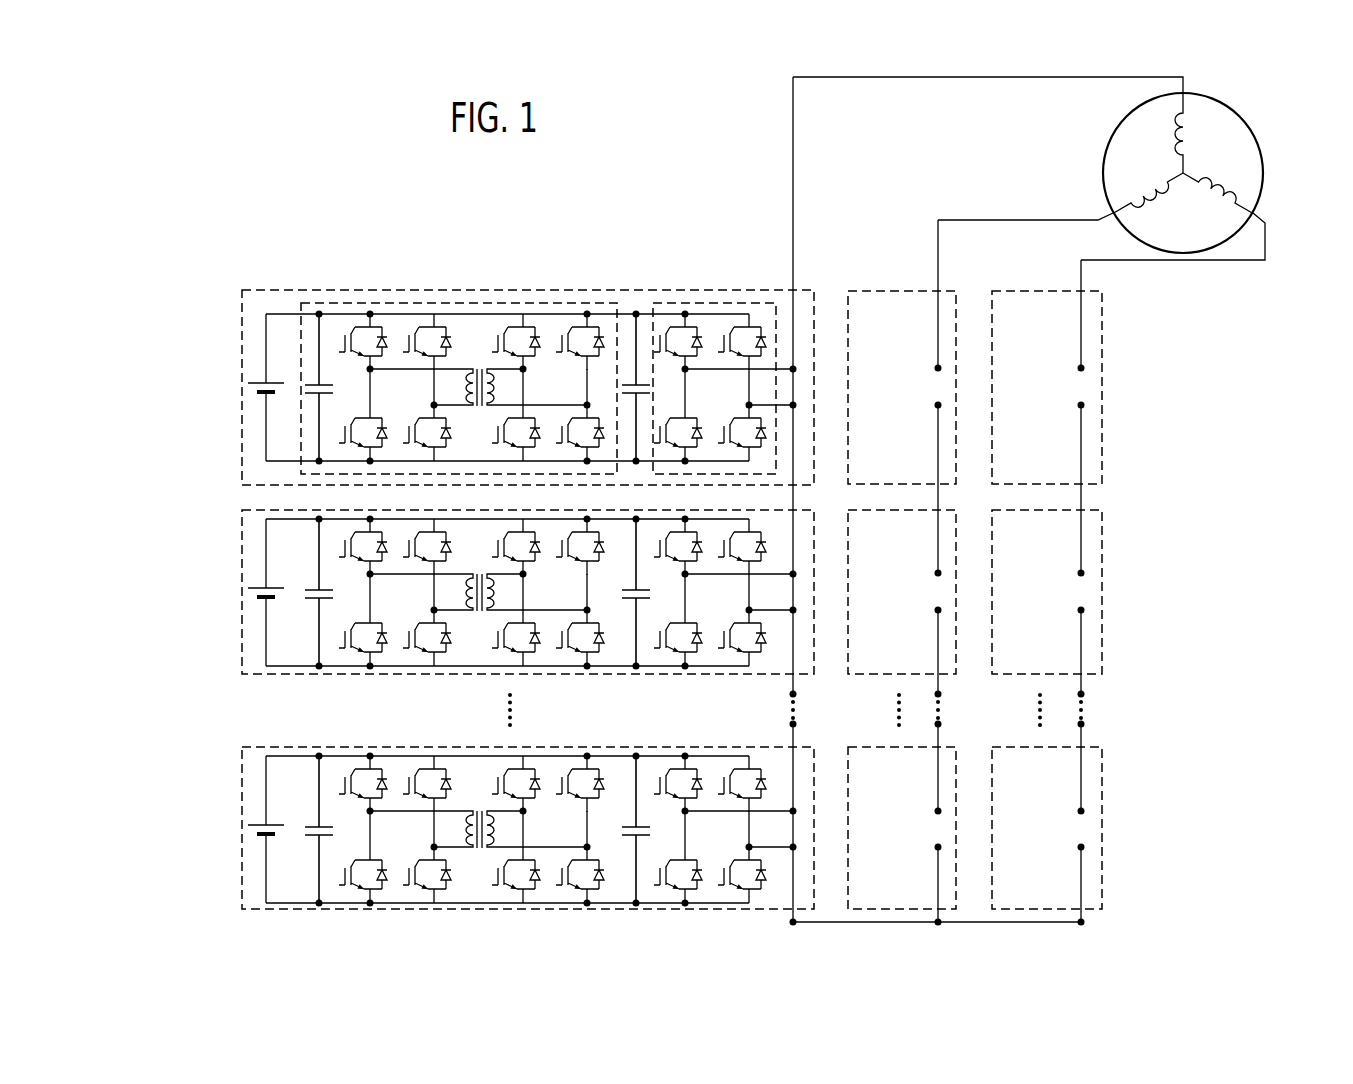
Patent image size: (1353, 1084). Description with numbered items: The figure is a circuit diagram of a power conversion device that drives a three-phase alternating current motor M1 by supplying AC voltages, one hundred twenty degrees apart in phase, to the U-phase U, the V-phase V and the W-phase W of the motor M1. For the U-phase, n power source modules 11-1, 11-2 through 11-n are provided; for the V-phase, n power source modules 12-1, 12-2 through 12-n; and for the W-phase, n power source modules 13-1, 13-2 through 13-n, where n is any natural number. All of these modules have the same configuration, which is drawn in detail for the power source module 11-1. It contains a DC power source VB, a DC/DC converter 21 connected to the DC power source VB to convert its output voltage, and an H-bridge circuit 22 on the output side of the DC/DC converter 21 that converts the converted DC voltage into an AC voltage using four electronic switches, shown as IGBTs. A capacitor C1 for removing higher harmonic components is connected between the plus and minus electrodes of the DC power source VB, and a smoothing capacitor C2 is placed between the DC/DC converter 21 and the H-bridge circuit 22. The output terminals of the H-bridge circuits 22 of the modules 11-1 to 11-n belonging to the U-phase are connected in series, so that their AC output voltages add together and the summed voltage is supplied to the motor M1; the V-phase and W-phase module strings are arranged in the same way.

The power source module 11-1 is at (482, 352).
The power source module 11-2 is at (240, 588).
The power source module 11-n is at (240, 825).
The power source module 12-1 is at (957, 432).
The power source module 12-2 is at (957, 632).
The power source module 12-n is at (957, 873).
The power source module 13-1 is at (1103, 432).
The power source module 13-2 is at (1103, 632).
The power source module 13-n is at (1103, 873).
The DC/DC converter 21 is at (470, 300).
The H-bridge circuit 22 is at (695, 300).
The DC power source VB is at (271, 387).
The capacitor C1 is at (333, 388).
The capacitor C2 is at (647, 388).
The motor M1 is at (1105, 165).
The U-phase U is at (987, 501).
The V-phase V is at (1024, 569).
The W-phase W is at (1172, 569).